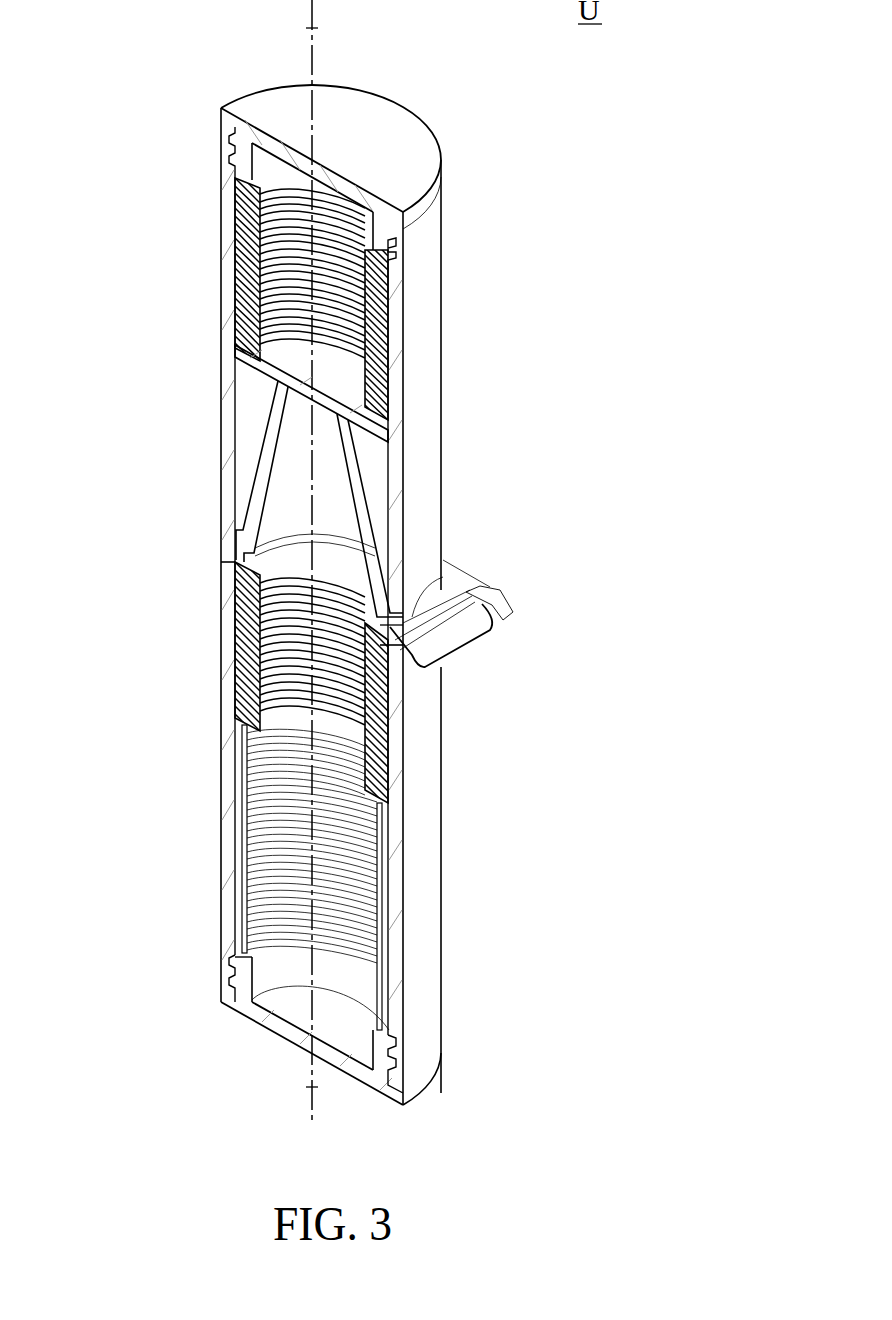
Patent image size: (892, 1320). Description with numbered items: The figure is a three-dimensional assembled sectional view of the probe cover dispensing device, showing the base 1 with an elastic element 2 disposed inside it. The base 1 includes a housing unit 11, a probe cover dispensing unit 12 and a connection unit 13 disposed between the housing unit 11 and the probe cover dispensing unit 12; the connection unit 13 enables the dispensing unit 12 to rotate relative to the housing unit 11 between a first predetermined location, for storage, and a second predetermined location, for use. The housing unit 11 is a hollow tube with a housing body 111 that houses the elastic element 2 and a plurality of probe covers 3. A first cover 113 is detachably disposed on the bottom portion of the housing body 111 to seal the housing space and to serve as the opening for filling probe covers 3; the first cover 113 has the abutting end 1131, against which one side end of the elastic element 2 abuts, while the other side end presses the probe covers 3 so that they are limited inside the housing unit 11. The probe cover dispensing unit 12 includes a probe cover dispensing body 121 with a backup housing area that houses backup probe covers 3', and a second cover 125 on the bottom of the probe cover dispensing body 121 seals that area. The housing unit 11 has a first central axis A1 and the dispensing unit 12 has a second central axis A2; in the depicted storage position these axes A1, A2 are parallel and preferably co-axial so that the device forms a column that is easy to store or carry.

The base 1 is at (200, 185).
The second cover 125 is at (347, 102).
The housing body 111 is at (430, 972).
The backup probe covers 3' is at (263, 295).
The probe cover dispensing unit 12 is at (535, 467).
The probe cover dispensing body 121 is at (430, 483).
The connection unit 13 is at (452, 645).
The probe cover 3 is at (271, 684).
The elastic element 2 is at (235, 826).
The abutting end 1131 is at (233, 944).
The first cover 113 is at (323, 1053).
The housing unit 11 is at (535, 953).
The first central axis A1 is at (312, 1088).
The second central axis A2 is at (312, 30).